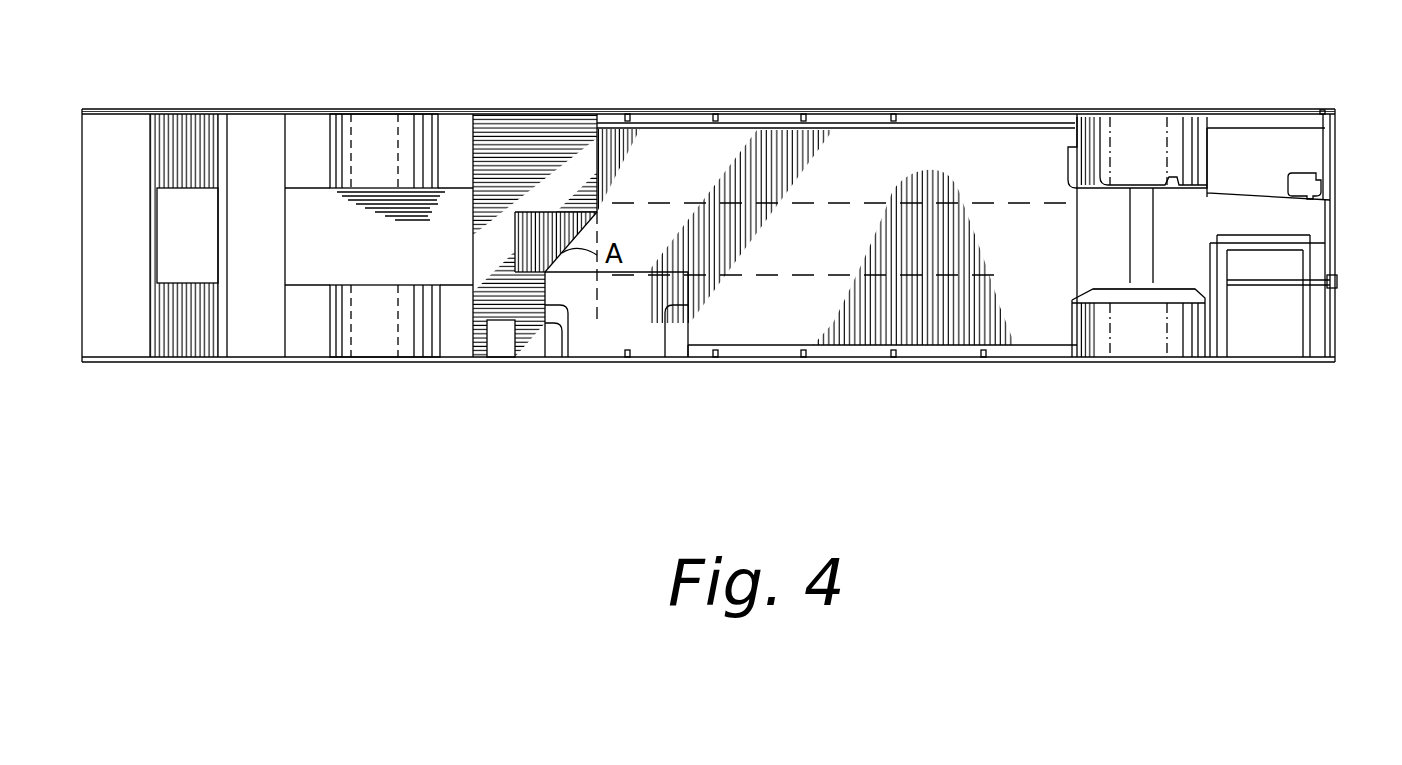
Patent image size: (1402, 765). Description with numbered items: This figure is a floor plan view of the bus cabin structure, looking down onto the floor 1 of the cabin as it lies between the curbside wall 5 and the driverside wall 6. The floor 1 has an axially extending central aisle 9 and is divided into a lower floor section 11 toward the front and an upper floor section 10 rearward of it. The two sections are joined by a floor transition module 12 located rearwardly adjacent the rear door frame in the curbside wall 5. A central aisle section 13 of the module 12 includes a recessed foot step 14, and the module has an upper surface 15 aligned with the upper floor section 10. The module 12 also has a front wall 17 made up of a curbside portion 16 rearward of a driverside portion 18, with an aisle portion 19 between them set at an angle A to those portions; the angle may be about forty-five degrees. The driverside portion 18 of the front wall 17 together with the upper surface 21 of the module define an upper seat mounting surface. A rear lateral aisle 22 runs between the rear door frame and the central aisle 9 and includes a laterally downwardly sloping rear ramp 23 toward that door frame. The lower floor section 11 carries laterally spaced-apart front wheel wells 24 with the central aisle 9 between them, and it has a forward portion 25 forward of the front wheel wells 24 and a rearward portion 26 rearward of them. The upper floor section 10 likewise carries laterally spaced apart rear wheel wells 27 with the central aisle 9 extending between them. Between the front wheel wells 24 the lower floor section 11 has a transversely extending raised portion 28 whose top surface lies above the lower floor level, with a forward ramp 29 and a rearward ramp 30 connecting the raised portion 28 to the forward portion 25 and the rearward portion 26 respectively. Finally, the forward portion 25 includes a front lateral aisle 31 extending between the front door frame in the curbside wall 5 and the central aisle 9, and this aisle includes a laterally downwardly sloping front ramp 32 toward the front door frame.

The floor 1 is at (880, 320).
The curbside wall 5 is at (262, 360).
The driverside wall 6 is at (703, 110).
The central aisle 9 is at (842, 195).
The lower floor section 11 is at (872, 212).
The upper floor section 10 is at (352, 256).
The floor transition module 12 is at (583, 158).
The central aisle section 13 is at (655, 238).
The aisle portion 19 is at (612, 229).
The recessed foot step 14 is at (545, 250).
The upper surface 15 is at (525, 190).
The upper surface 21 is at (517, 147).
The curbside portion 16 is at (558, 380).
The front wall 17 is at (558, 357).
The driverside portion 18 is at (600, 155).
The rear lateral aisle 22 is at (636, 345).
The rear ramp 23 is at (617, 323).
The front wheel wells 24 is at (1153, 127).
The forward portion 25 is at (1300, 217).
The rearward portion 26 is at (1007, 223).
The rear wheel wells 27 is at (385, 135).
The raised portion 28 is at (1142, 207).
The forward ramp 29 is at (1185, 223).
The rearward ramp 30 is at (1108, 263).
The front lateral aisle 31 is at (1301, 310).
The front ramp 32 is at (1273, 320).